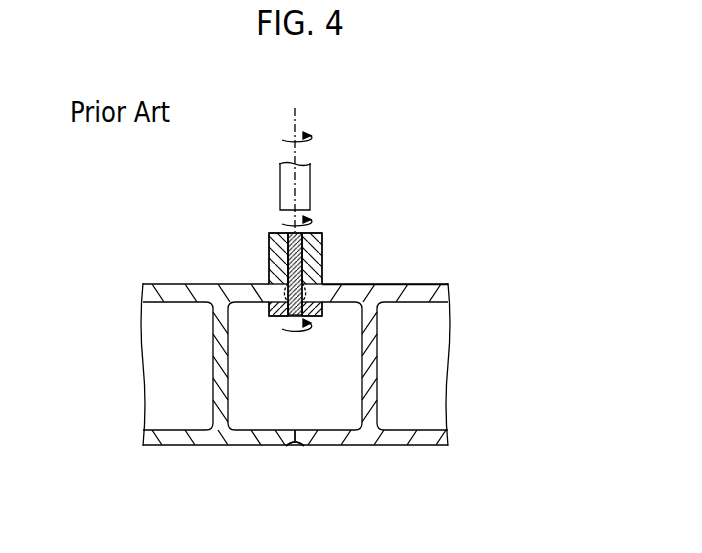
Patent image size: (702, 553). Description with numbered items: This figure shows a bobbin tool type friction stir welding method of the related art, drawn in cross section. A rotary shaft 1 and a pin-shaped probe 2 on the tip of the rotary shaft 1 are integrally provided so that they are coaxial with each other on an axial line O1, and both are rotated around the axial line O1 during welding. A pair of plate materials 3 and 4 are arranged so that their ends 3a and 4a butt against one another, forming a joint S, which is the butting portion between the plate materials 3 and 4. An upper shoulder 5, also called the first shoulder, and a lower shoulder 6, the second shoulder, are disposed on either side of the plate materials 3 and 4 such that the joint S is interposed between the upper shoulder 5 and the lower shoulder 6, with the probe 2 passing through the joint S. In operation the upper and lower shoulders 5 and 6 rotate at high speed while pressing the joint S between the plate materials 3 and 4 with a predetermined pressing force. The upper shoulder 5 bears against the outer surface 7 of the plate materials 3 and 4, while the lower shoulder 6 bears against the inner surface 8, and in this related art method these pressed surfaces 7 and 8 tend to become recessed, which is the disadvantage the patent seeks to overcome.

The rotary shaft 1 is at (311, 183).
The axial line O1 is at (298, 109).
The pin-shaped probe 2 is at (323, 237).
The upper shoulder 5 is at (268, 246).
The plate material 3 is at (205, 283).
The plate material 4 is at (392, 283).
The end of plate material 3a is at (284, 291).
The end of plate material 4a is at (306, 292).
The outer surface (one surface) 7 is at (374, 283).
The lower shoulder 6 is at (271, 318).
The inner surface (the other surface) 8 is at (335, 305).
The joint (butting portion) S is at (261, 312).